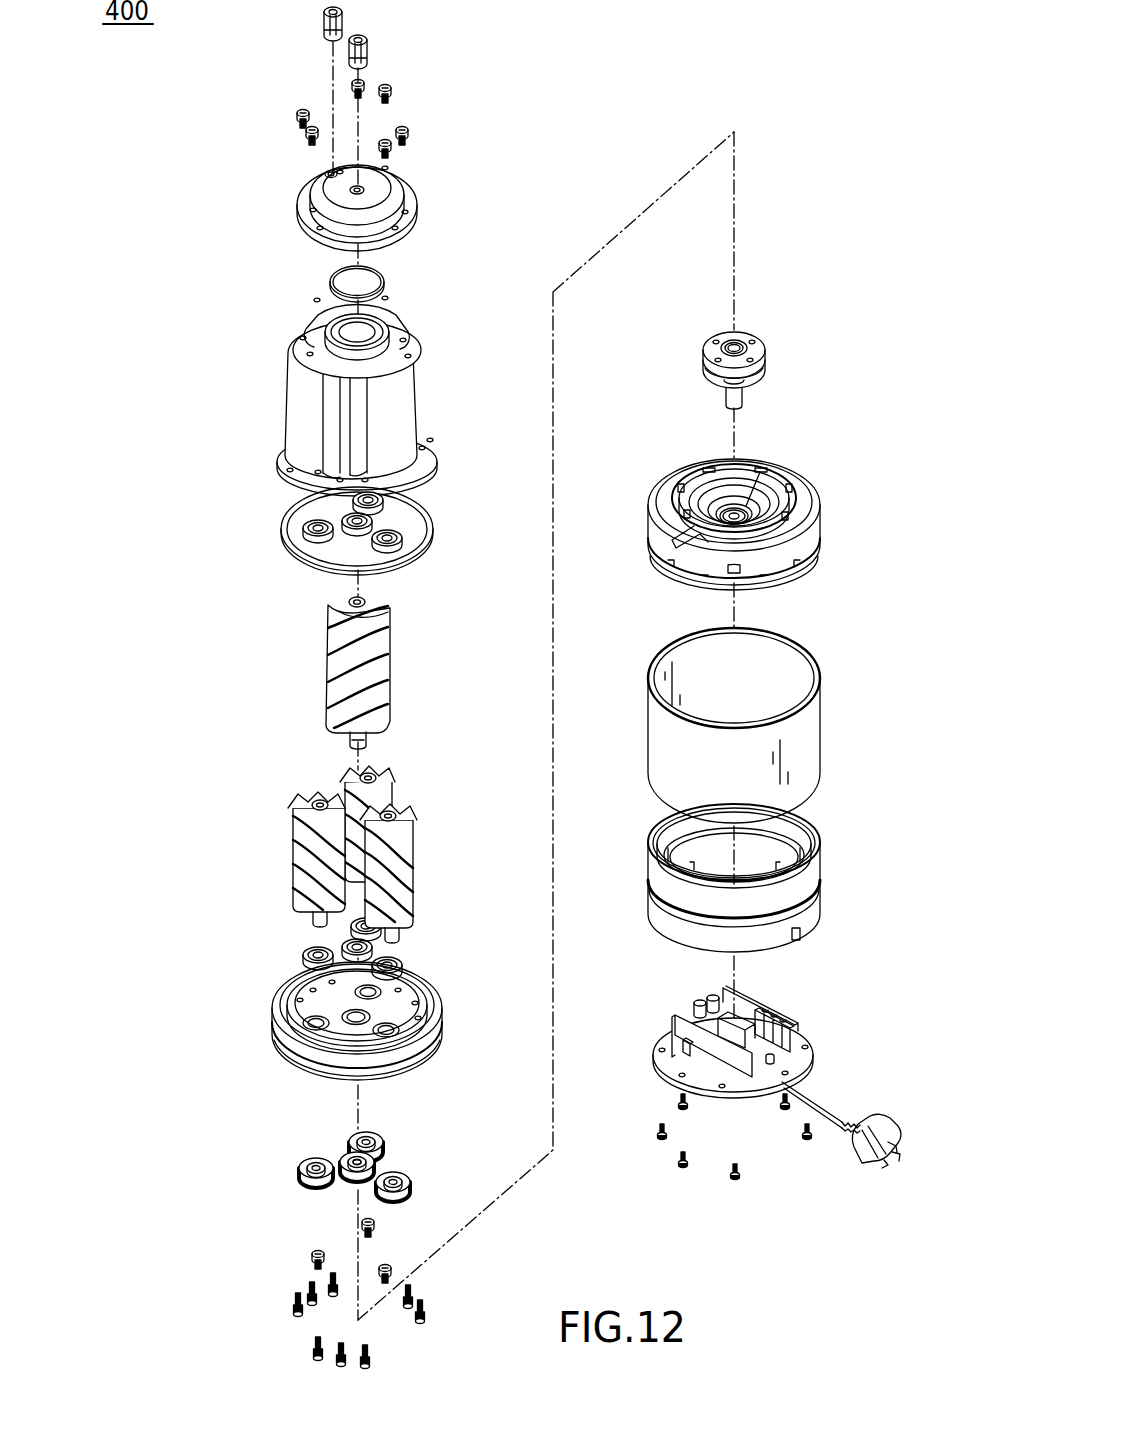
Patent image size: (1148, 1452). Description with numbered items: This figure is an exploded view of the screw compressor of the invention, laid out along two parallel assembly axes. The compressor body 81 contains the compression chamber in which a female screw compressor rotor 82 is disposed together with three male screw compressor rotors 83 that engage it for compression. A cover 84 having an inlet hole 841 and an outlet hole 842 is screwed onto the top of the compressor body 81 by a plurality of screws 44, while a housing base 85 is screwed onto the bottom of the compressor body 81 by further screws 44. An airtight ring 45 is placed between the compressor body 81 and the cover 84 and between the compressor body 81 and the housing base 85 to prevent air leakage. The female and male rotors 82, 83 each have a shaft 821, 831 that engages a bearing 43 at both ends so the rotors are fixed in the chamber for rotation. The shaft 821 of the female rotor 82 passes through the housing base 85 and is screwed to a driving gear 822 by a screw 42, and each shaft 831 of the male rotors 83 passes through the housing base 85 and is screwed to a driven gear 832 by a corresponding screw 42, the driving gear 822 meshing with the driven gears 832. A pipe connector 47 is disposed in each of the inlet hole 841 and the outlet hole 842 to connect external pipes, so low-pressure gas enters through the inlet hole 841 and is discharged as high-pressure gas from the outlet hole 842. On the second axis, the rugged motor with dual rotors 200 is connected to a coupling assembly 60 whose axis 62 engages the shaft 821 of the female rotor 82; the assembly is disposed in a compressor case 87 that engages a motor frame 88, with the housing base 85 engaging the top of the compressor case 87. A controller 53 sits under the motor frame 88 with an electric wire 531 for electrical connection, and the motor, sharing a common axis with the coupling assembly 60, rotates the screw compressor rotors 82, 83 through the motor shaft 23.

The pipe connector 47 is at (346, 49).
The screws 44 is at (398, 95).
The inlet hole 841 is at (328, 174).
The outlet hole 842 is at (368, 189).
The cover 84 is at (330, 202).
The airtight ring 45 is at (333, 284).
The compressor body 81 is at (296, 400).
The bearing 43 is at (302, 528).
The female screw compressor rotor 82 is at (342, 640).
The shaft 821 is at (348, 726).
The male screw compressor rotor 83 is at (307, 838).
The shaft 831 is at (312, 924).
The housing base 85 is at (300, 1040).
The driven gear 832 is at (358, 1118).
The driving gear 822 is at (336, 1184).
The screw 42 is at (311, 1262).
The coupling assembly 60 is at (766, 342).
The axis 62 is at (740, 346).
The rugged motor with dual rotors 200 is at (744, 517).
The motor shaft 23 is at (740, 498).
The compressor case 87 is at (804, 746).
The motor frame 88 is at (804, 876).
The controller 53 is at (760, 1034).
The electric wire 531 is at (810, 1110).